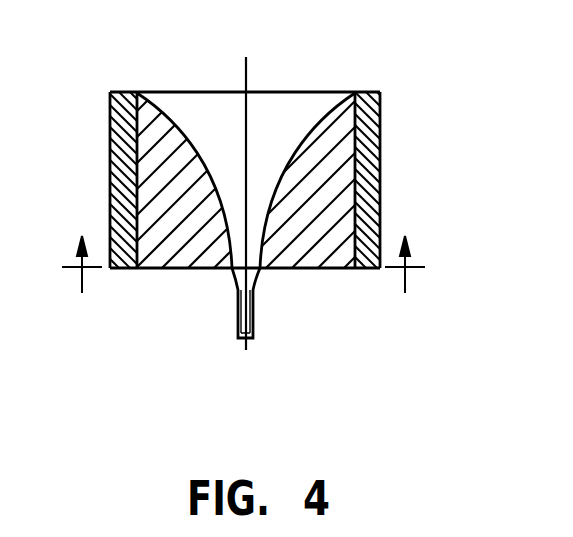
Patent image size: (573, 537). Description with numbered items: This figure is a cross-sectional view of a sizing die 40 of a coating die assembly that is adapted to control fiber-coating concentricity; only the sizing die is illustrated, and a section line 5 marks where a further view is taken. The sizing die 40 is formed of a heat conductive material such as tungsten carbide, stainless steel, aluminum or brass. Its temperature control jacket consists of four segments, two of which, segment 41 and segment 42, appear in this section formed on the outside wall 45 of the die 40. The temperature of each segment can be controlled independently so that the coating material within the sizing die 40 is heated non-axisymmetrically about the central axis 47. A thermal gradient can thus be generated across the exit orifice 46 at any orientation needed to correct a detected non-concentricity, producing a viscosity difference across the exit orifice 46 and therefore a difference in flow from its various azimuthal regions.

The sizing die 40 is at (300, 250).
The segment 41 is at (116, 114).
The segment 42 is at (382, 110).
The outside wall 45 is at (382, 165).
The exit orifice 46 is at (228, 274).
The central axis line 47 is at (249, 70).
The section line 5- 5 is at (243, 248).